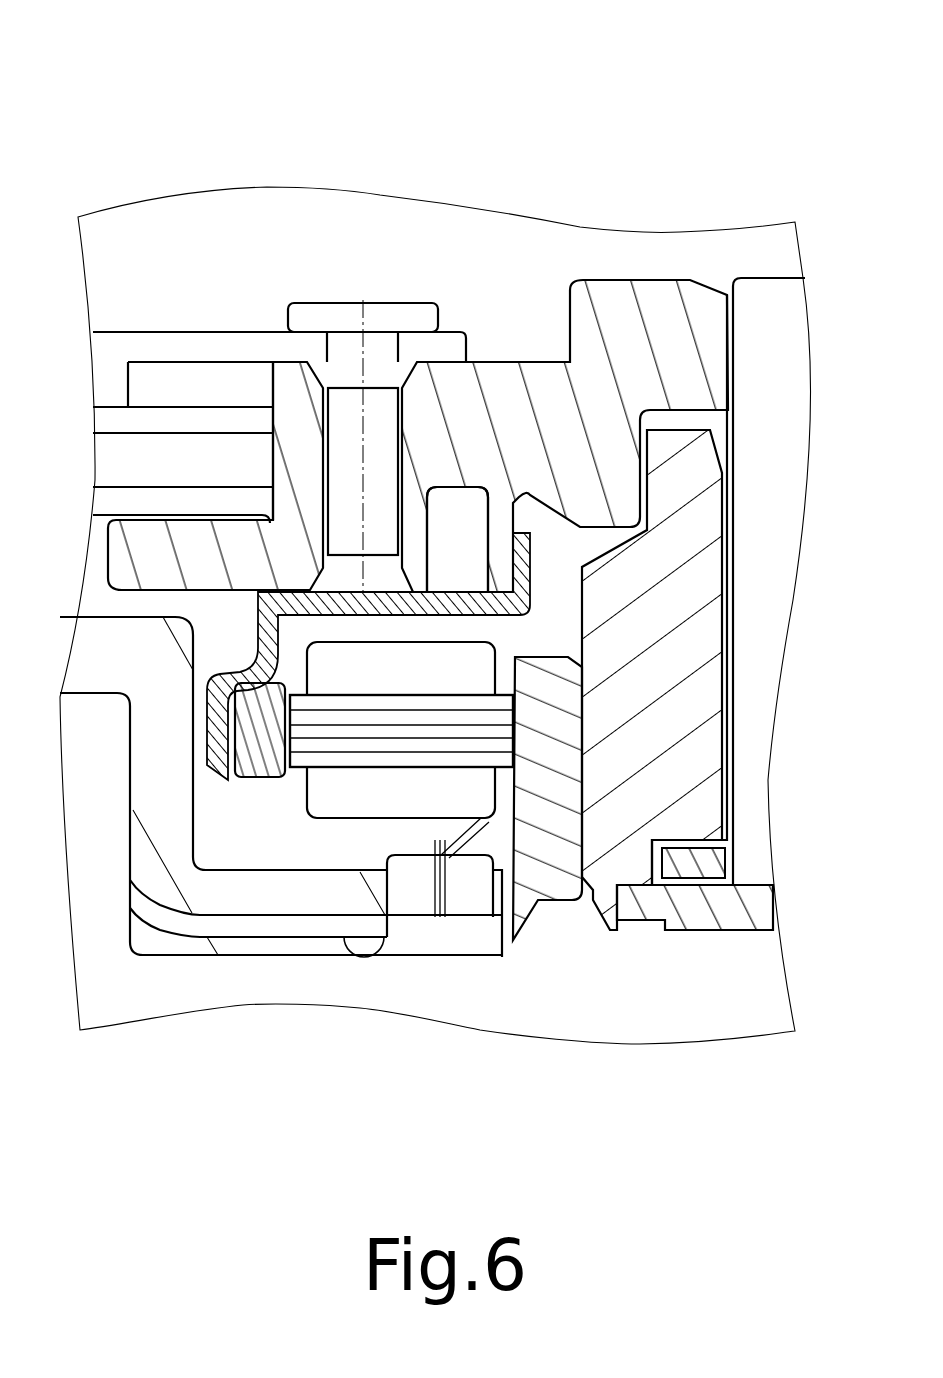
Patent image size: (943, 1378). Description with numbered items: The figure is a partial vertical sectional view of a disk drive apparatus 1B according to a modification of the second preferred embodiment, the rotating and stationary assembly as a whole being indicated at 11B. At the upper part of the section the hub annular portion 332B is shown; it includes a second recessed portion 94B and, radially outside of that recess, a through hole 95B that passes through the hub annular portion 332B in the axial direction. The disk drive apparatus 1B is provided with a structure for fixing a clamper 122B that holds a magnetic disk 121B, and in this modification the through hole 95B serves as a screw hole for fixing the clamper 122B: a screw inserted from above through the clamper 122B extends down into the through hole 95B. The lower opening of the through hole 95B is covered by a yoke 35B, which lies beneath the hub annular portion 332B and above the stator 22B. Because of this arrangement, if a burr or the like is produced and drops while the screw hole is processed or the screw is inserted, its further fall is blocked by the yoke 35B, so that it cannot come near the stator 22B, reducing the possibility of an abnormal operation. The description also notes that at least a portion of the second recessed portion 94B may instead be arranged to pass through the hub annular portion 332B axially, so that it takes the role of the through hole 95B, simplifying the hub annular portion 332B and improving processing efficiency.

The disk drive apparatus 1B is at (743, 123).
The stator 11B is at (363, 123).
The magnetic disk 121B is at (187, 425).
The clamper 122B is at (307, 317).
The through hole 95B is at (380, 417).
The second recessed portion 94B is at (455, 523).
The hub annular portion 332B is at (605, 403).
The yoke 35B is at (347, 603).
The stator 22B is at (337, 832).